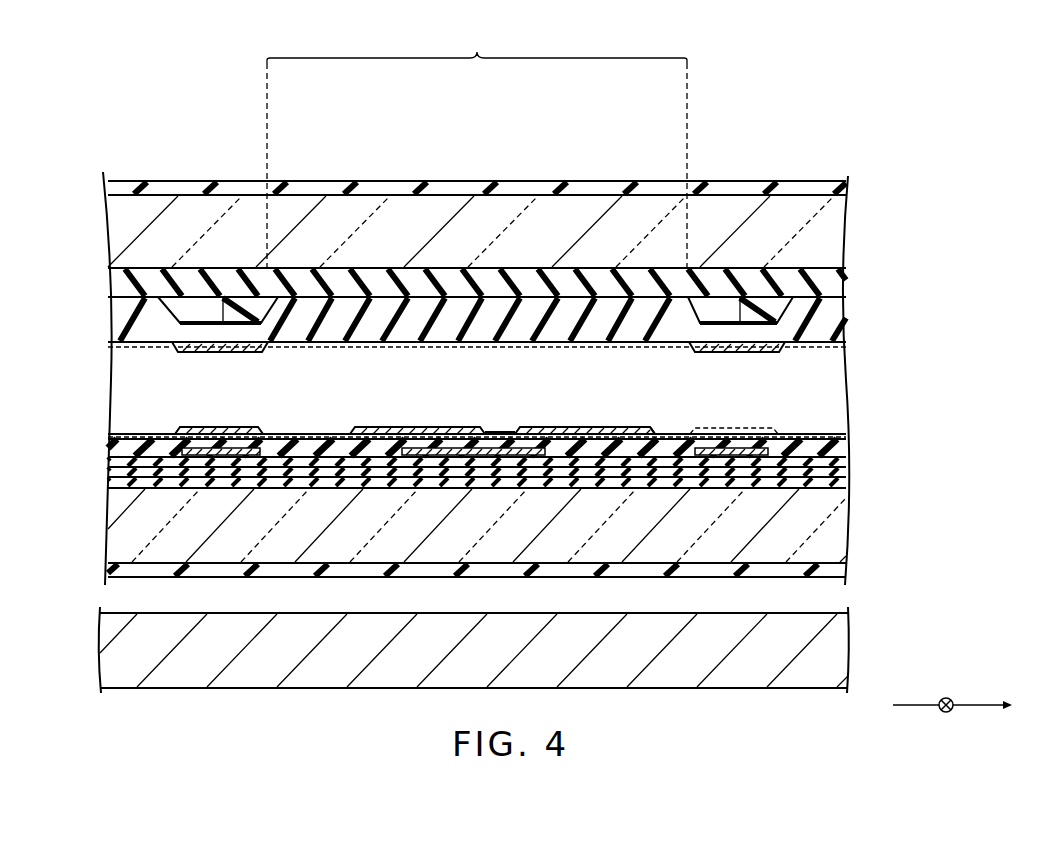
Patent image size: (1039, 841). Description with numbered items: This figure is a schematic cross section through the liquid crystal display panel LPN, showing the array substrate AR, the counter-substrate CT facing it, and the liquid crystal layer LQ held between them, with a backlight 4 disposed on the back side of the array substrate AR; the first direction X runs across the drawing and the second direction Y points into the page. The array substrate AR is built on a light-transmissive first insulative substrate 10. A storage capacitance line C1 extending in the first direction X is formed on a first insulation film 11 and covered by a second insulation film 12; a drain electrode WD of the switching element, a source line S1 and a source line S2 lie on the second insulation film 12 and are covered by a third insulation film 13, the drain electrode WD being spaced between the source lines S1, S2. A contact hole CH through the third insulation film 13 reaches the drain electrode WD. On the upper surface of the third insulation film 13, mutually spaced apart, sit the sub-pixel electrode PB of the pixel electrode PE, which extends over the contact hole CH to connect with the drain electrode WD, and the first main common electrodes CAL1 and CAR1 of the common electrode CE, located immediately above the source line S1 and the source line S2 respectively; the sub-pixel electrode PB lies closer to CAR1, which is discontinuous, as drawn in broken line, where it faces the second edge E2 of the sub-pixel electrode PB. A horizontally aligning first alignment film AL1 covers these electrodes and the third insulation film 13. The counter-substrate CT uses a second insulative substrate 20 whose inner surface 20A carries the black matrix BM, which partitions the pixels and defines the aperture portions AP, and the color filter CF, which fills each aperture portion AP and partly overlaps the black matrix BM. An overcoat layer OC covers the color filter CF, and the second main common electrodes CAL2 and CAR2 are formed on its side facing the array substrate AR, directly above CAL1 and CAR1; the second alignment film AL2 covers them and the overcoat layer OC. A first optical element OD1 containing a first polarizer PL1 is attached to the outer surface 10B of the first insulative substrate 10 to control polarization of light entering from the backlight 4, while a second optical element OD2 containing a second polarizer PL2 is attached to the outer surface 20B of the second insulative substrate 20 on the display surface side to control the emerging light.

The aperture portion AP is at (477, 148).
The liquid crystal display panel LPN is at (860, 171).
The counter-substrate CT is at (474, 259).
The array substrate AR is at (474, 487).
The liquid crystal layer LQ is at (126, 400).
The second optical element OD2 is at (445, 201).
The second polarizer PL2 is at (110, 189).
The first optical element OD1 is at (445, 582).
The first polarizer PL1 is at (112, 570).
The second insulative substrate 20 is at (835, 227).
The inner surface 20A is at (110, 284).
The outer surface 20B is at (176, 189).
The black matrix BM is at (236, 285).
The color filter CF is at (840, 277).
The overcoat layer OC is at (840, 322).
The second alignment film AL2 is at (832, 347).
The first alignment film AL1 is at (800, 435).
The second main common electrode CAL2 is at (240, 354).
The second main common electrode CAR2 is at (722, 355).
The first main common electrode CAL1 is at (224, 409).
The first main common electrode CAR1 is at (722, 428).
The common electrode CE is at (222, 430).
The sub-pixel electrode PB is at (502, 408).
The pixel electrode PE is at (596, 432).
The contact hole CH is at (497, 433).
The second edge E2 is at (660, 433).
The third insulation film 13 is at (840, 439).
The second insulation film 12 is at (843, 462).
The storage capacitance line C1 is at (843, 473).
The first insulation film 11 is at (843, 483).
The first insulative substrate 10 is at (835, 529).
The outer surface 10B is at (137, 570).
The source line S1 is at (226, 457).
The source line S2 is at (738, 457).
The drain electrode WD is at (492, 487).
The backlight 4 is at (835, 660).
The first direction X is at (961, 706).
The second direction Y is at (937, 714).